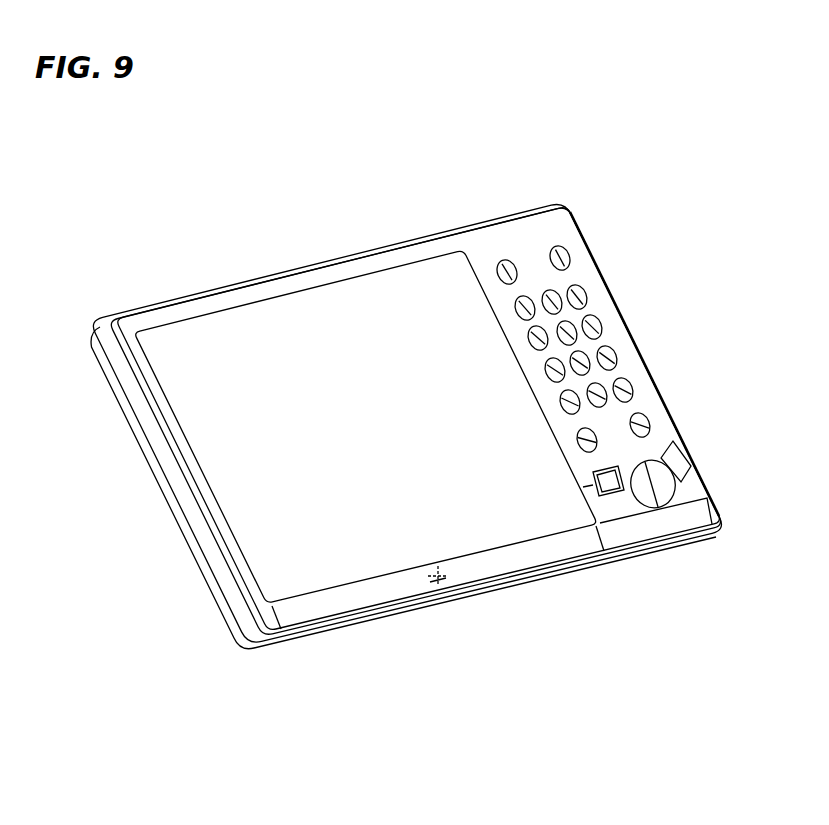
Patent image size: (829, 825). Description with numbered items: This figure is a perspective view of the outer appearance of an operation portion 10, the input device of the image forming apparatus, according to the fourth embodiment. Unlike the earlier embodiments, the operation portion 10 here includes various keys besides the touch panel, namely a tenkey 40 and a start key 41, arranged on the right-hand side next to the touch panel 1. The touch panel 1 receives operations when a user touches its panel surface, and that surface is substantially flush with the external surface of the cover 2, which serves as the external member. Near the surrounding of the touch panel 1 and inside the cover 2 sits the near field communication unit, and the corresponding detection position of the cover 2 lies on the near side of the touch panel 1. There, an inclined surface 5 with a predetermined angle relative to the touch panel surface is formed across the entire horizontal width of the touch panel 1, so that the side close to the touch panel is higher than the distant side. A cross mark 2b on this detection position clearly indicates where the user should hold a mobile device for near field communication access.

The operation portion 10 is at (393, 225).
The touch panel 1 is at (262, 347).
The cover 2 is at (374, 592).
The mark (cross mark) 2b is at (442, 590).
The inclined surface 5 is at (654, 525).
The tenkey 40 is at (587, 297).
The start key 41 is at (668, 457).